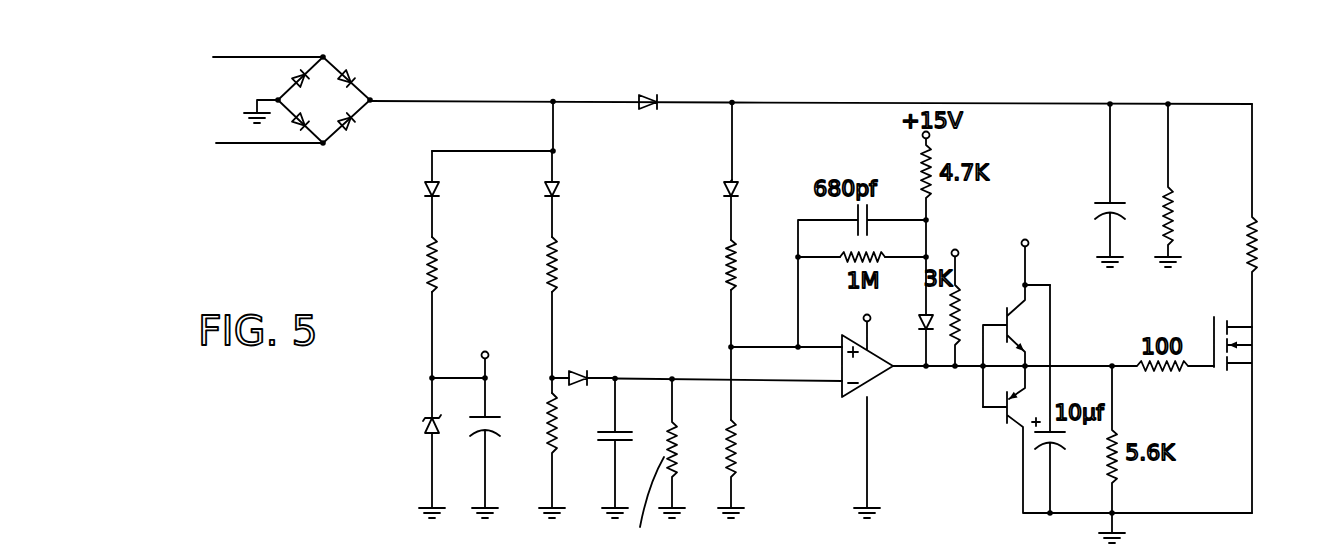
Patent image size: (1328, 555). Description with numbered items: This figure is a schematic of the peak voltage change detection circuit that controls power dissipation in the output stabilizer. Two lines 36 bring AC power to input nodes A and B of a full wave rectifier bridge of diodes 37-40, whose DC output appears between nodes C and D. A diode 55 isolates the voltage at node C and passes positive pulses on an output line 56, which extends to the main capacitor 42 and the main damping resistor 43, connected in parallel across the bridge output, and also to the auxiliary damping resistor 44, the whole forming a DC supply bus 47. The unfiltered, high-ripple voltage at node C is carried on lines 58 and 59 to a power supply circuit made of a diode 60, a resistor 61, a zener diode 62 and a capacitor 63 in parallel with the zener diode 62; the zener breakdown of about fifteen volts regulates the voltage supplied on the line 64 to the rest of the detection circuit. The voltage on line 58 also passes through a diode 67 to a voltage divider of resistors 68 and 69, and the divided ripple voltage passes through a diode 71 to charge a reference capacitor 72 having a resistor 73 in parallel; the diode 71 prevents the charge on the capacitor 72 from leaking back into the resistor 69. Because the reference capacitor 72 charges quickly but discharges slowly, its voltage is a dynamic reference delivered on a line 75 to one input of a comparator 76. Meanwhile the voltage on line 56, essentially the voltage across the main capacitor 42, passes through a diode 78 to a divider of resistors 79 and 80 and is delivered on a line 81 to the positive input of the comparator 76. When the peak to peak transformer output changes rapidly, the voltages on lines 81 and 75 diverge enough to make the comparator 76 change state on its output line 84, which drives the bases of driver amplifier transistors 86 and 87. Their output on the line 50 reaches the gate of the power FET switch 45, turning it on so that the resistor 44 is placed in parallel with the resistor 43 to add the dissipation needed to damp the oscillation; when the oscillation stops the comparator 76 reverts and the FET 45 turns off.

The lines 36 is at (262, 57).
The diodes 37-40 is at (363, 72).
The main capacitor 42 is at (1098, 201).
The main damping resistor 43 is at (1178, 206).
The auxiliary damping resistor 44 is at (1260, 241).
The switch 45 is at (1253, 325).
The DC supply line 47 is at (1225, 101).
The line 50 is at (1198, 366).
The diode 55 is at (661, 94).
The output line 56 is at (712, 101).
The line 58 is at (558, 125).
The line 59 is at (461, 150).
The diode 60 is at (425, 193).
The resistor 61 is at (422, 279).
The zener diode 62 is at (424, 441).
The capacitor 63 is at (483, 440).
The line 64 is at (483, 371).
The diode 67 is at (563, 193).
The resistor 68 is at (560, 262).
The resistor 69 is at (565, 456).
The diode 71 is at (586, 370).
The reference capacitor 72 is at (622, 432).
The resistor 73 is at (678, 432).
The line 75 is at (762, 382).
The comparator 76 is at (850, 395).
The diode 78 is at (727, 180).
The resistor 79 is at (726, 250).
The resistor 80 is at (738, 463).
The line 81 is at (763, 345).
The output line 84 is at (932, 374).
The driver amplifier transistor 86 is at (1005, 314).
The driver amplifier transistor 87 is at (1003, 414).